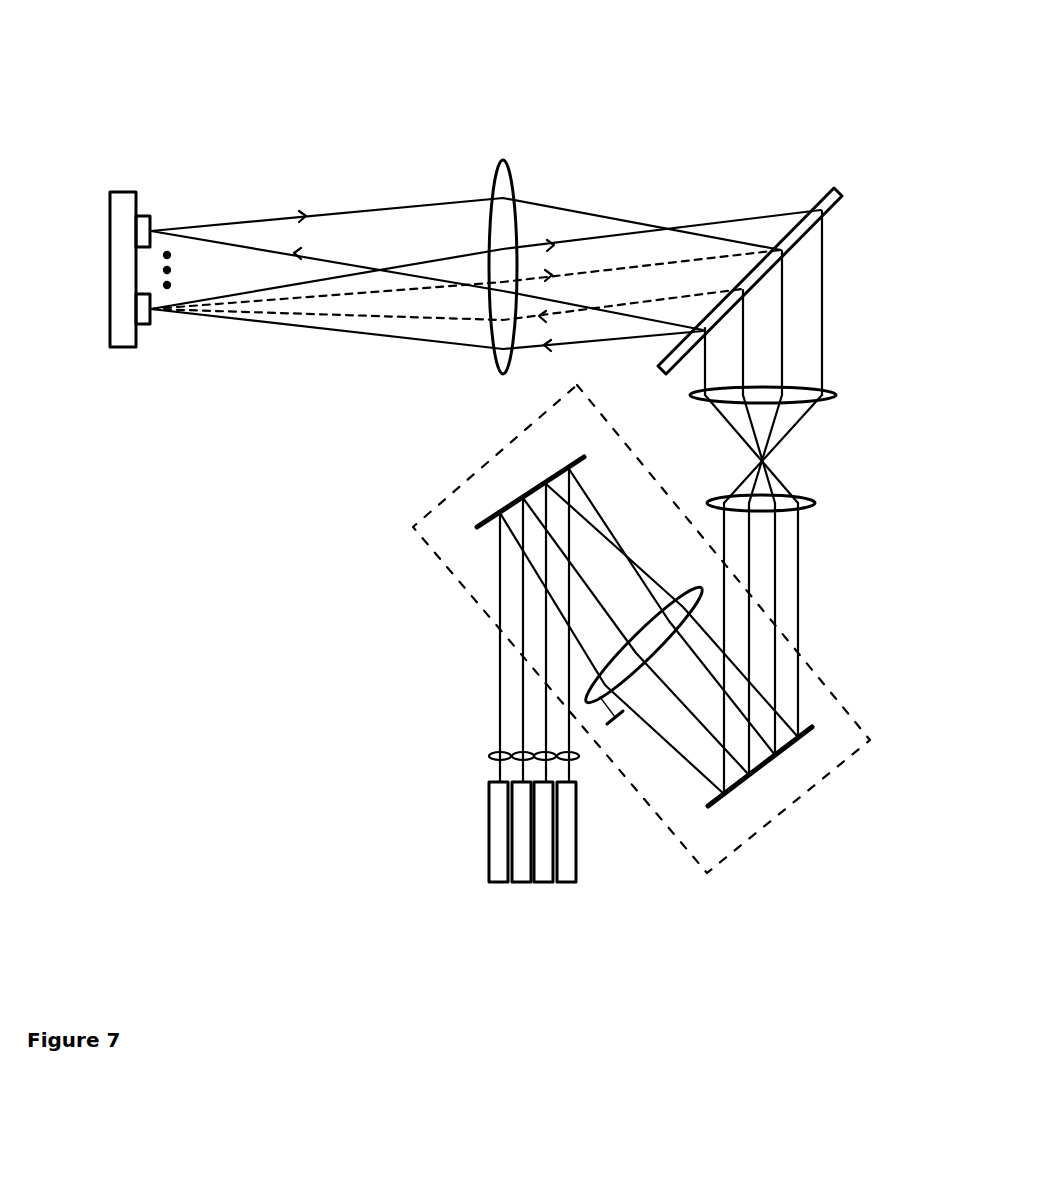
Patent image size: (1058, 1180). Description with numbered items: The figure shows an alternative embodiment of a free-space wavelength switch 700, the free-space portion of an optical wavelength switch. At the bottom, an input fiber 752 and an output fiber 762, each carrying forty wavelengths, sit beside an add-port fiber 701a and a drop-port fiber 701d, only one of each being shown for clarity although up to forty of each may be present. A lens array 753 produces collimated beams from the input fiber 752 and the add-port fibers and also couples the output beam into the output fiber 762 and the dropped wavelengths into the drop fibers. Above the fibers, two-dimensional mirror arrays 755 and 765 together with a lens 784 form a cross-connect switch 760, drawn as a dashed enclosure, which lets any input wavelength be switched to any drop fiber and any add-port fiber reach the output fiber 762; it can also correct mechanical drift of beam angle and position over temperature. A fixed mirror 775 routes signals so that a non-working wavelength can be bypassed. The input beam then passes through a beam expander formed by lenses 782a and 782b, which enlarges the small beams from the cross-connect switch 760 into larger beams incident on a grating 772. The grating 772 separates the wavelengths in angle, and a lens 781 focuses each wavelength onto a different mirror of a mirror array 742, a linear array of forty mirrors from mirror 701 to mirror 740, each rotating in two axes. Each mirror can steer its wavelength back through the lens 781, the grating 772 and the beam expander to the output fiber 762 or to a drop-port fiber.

The free-space wavelength switch 700 is at (789, 88).
The mirror array 742 is at (107, 190).
The mirror 701 is at (155, 212).
The mirror 740 is at (155, 328).
The lens 781 is at (505, 151).
The grating 772 is at (838, 210).
The lens 782b is at (833, 403).
The lens 782a is at (815, 497).
The cross-connect switch 760 is at (861, 749).
The mirror array 765 is at (797, 748).
The mirror array 755 is at (537, 481).
The lens 784 is at (697, 583).
The fixed mirror 775 is at (623, 717).
The lens array 753 is at (487, 753).
The drop-port fiber 701d is at (497, 885).
The output fiber 762 is at (521, 885).
The input fiber 752 is at (543, 885).
The add-port fiber 701a is at (569, 885).